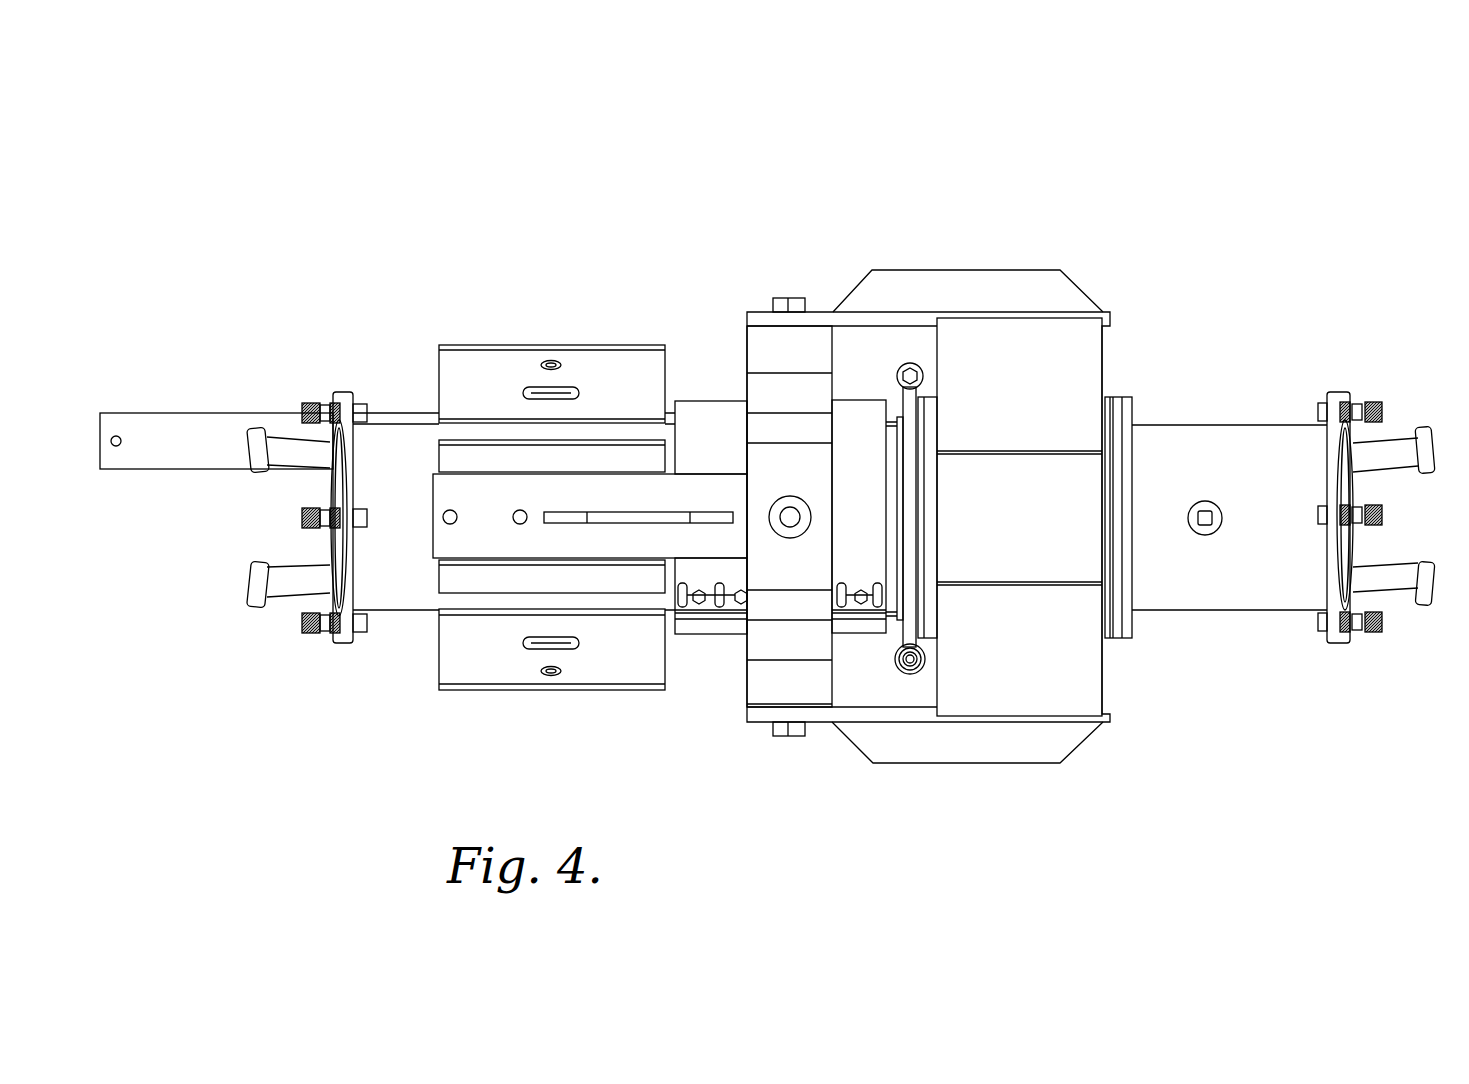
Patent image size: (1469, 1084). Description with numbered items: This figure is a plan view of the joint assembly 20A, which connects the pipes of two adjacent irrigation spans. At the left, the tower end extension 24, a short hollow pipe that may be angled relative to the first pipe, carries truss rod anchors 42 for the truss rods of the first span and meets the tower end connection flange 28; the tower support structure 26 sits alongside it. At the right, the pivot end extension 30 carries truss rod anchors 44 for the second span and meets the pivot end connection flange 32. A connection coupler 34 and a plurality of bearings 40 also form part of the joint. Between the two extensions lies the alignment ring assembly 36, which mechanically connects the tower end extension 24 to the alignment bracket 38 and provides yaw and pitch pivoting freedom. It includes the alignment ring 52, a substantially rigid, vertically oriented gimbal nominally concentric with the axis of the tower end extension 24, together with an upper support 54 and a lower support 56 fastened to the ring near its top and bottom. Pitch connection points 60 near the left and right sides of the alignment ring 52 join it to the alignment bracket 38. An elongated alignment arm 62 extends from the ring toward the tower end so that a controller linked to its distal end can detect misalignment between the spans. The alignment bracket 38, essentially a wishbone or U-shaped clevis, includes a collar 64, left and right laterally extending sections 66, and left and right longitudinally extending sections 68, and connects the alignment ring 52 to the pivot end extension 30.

The joint assembly 20A is at (663, 163).
The tower end extension 24 is at (400, 443).
The tower support structure 26 is at (484, 340).
The tower end connection flange 28 is at (355, 545).
The pivot end extension 30 is at (1290, 440).
The pivot end connection flange 32 is at (1335, 567).
The connection coupler 34 is at (683, 393).
The alignment ring assembly 36 is at (742, 468).
The alignment bracket 38 is at (1070, 267).
The bearings 40 is at (933, 645).
The truss rod anchors 42 is at (247, 480).
The truss rod anchors 44 is at (1430, 420).
The alignment ring 52 is at (742, 348).
The upper support 54 is at (487, 545).
The lower support 56 is at (812, 503).
The pitch connection points 60 is at (795, 292).
The alignment arm 62 is at (193, 427).
The collar 64 is at (1063, 488).
The laterally extending sections 66 is at (1073, 358).
The longitudinally extending sections 68 is at (895, 325).